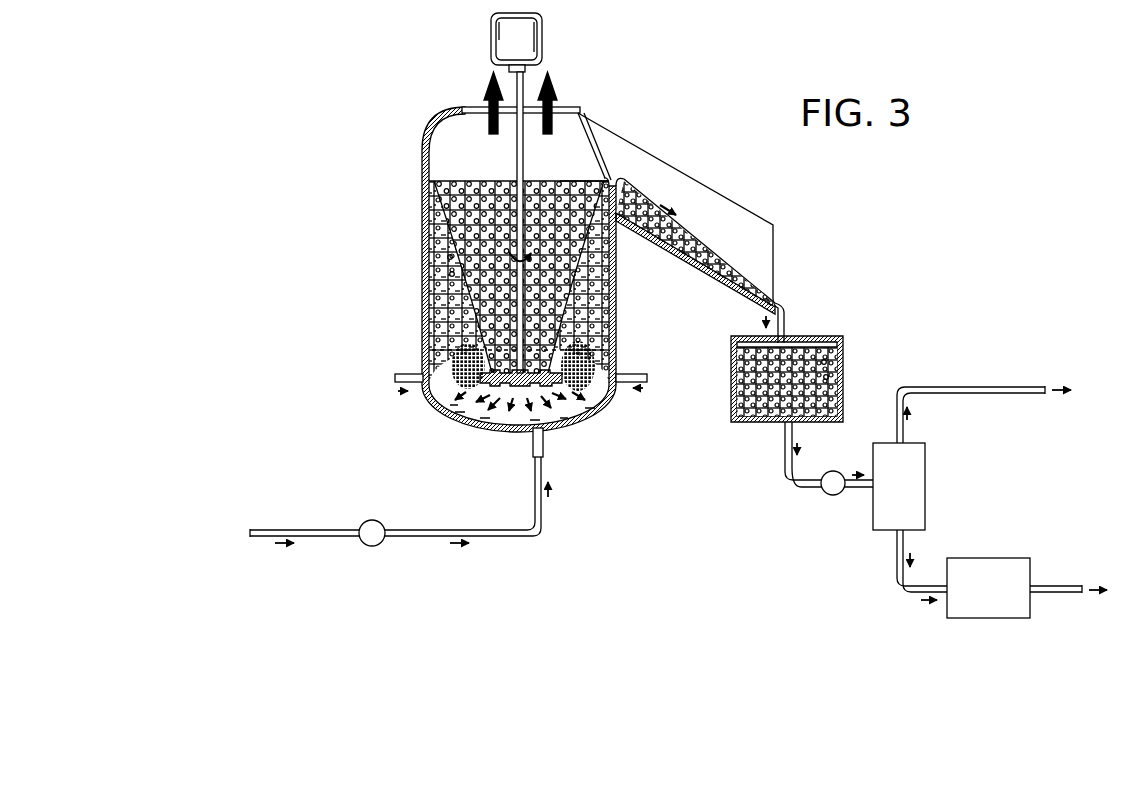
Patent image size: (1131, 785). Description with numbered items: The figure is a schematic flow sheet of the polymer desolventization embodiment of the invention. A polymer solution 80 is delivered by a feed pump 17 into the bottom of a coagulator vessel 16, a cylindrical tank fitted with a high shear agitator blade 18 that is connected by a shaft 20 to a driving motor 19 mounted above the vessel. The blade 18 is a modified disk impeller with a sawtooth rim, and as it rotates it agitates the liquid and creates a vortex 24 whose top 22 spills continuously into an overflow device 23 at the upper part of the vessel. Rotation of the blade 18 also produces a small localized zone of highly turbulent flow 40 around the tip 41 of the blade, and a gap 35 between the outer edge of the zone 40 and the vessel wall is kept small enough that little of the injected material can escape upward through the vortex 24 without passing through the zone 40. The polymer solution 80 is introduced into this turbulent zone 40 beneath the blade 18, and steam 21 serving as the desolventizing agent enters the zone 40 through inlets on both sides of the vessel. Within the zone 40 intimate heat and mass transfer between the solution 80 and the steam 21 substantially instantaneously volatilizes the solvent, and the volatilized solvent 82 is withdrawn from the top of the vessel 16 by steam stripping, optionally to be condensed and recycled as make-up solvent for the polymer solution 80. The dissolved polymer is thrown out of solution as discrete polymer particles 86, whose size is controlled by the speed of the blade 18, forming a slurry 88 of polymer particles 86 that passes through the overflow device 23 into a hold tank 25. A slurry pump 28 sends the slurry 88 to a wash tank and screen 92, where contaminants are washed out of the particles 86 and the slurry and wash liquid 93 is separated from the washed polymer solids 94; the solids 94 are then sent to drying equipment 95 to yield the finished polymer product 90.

The coagulator vessel 16 is at (421, 212).
The feed pump 17 is at (372, 546).
The high shear agitator blade 18 is at (499, 386).
The driving motor 19 is at (543, 42).
The shaft 20 is at (523, 151).
The steam 21 is at (514, 391).
The top of the vortex 22 is at (573, 181).
The overflow device 23 is at (682, 262).
The vortex 24 is at (450, 208).
The hold tank 25 is at (755, 423).
The slurry pump 28 is at (829, 495).
The gap 35 is at (445, 361).
The zone of highly turbulent flow 40 is at (583, 398).
The tip of the blade 41 is at (557, 373).
The polymer solution 80 is at (289, 486).
The volatilized solvent 82 is at (487, 100).
The polymer particles 86 is at (430, 273).
The slurry of polymer particles 88 is at (784, 320).
The polymer product 90 is at (1067, 596).
The wash tank and screen 92 is at (917, 501).
The slurry and wash liquid 93 is at (952, 387).
The washed polymer solids 94 is at (897, 573).
The drying equipment 95 is at (970, 614).